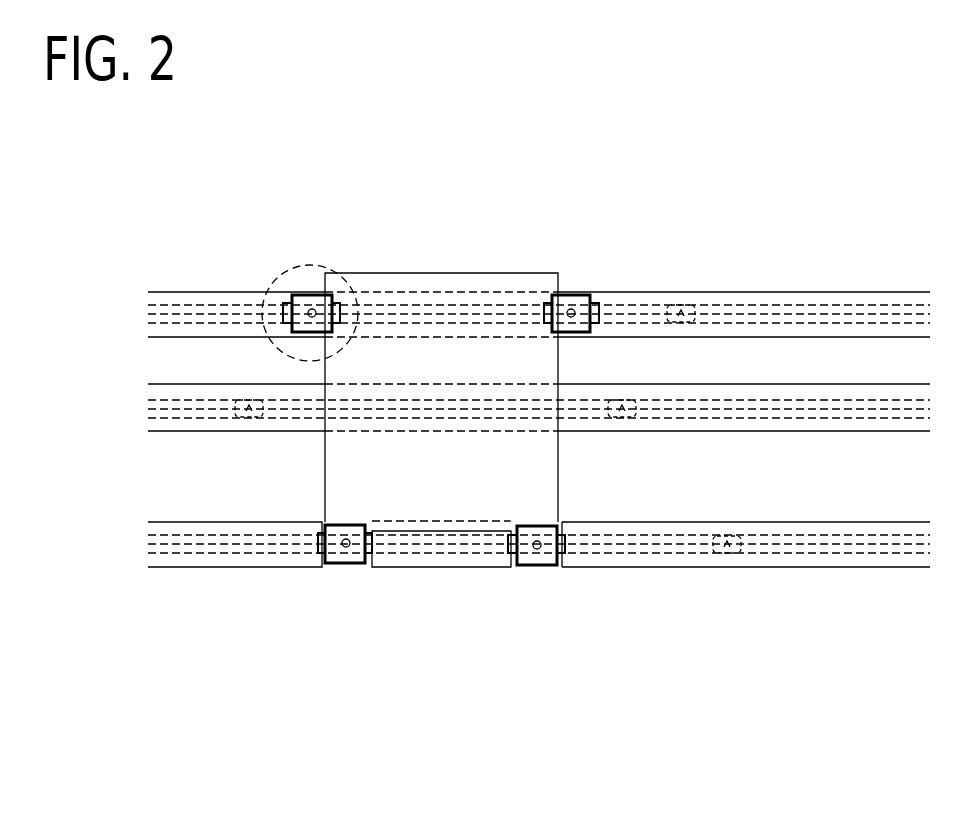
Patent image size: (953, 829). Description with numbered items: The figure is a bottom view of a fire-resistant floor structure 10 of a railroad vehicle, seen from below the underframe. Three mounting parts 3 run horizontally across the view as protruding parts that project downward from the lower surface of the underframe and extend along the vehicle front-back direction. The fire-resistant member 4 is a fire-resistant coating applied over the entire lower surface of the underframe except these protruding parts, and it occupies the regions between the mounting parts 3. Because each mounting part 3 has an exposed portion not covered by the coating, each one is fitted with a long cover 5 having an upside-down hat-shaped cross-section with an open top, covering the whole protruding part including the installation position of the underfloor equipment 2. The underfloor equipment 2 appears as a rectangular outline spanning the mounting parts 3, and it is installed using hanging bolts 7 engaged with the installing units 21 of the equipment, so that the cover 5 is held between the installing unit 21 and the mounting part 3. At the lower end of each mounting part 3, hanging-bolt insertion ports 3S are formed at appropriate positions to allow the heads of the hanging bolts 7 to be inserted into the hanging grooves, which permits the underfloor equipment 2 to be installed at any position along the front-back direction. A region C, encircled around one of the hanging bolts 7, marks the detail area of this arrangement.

The underfloor equipment 2 is at (437, 273).
The mounting part 3 is at (190, 300).
The hanging-bolt insertion port 3S is at (683, 303).
The fire-resistant member 4 is at (252, 375).
The cover 5 is at (218, 292).
The hanging bolt 7 is at (300, 295).
The fire-resistant floor structure 10 is at (458, 394).
The installing unit 21 is at (316, 292).
The region C is at (278, 272).